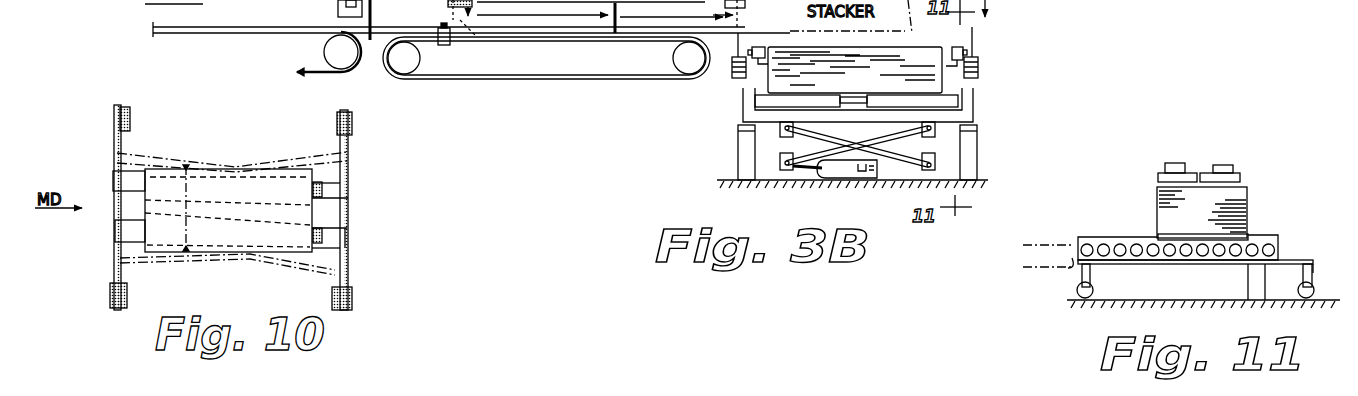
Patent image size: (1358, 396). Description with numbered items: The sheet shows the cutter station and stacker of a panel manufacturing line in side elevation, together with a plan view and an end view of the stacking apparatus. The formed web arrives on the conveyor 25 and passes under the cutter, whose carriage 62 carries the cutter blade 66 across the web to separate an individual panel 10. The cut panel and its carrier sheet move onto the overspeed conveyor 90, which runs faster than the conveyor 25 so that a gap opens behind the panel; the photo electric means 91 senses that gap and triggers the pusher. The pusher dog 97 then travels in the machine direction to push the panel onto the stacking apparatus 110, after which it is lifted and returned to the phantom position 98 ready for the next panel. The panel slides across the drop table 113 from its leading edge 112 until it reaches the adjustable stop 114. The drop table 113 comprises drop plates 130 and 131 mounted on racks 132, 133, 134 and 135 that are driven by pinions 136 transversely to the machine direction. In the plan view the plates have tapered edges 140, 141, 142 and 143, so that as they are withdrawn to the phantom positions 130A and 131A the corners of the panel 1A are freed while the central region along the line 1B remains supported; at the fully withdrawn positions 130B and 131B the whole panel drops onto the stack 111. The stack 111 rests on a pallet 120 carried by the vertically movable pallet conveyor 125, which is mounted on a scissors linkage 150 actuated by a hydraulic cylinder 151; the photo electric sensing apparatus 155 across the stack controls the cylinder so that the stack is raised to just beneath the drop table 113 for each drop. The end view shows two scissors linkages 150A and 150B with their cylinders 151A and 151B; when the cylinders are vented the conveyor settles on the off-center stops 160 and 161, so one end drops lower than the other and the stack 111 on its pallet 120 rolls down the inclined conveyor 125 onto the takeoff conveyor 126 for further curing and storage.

In FIG. 3B, the panel 10 is at (682, 22).
In FIG. 3B, the conveyor 25 is at (153, 30).
In FIG. 3B, the carriage 62 is at (338, 10).
In FIG. 3B, the cutter blade 66 is at (370, 40).
In FIG. 3B, the overspeed conveyor 90 is at (569, 85).
In FIG. 3B, the photo electric means 91 is at (443, 27).
In FIG. 3B, the pusher dog 97 is at (612, 26).
In FIG. 3B, the pusher dog return position 98 is at (463, 33).
In FIG. 3B, the stacking apparatus 110 is at (1035, 43).
In FIG. 10, the stacking apparatus 110 is at (454, 220).
In FIG. 11, the stacking apparatus 110 is at (1284, 172).
In FIG. 3B, the stack 111 is at (857, 70).
In FIG. 11, the stack 111 is at (1247, 204).
In FIG. 3B, the leading edge 112 is at (742, 36).
In FIG. 10, the leading edge 112 is at (115, 187).
In FIG. 3B, the drop table 113 is at (982, 36).
In FIG. 10, the drop table 113 is at (349, 236).
In FIG. 11, the drop table 113 is at (1156, 177).
In FIG. 3B, the stop 114 is at (985, 33).
In FIG. 10, the stop 114 is at (327, 186).
In FIG. 11, the stop 114 is at (1220, 164).
In FIG. 3B, the pallet 120 is at (945, 93).
In FIG. 11, the pallet 120 is at (1235, 234).
In FIG. 3B, the pallet conveyor 125 is at (977, 100).
In FIG. 11, the pallet conveyor 125 is at (1282, 238).
In FIG. 11, the takeoff conveyor 126 is at (1043, 247).
In FIG. 10, the drop plate 130 is at (348, 192).
In FIG. 10, the drop plate intermediate position 130A is at (268, 162).
In FIG. 10, the drop plate withdrawn position 130B is at (305, 160).
In FIG. 10, the drop plate 131 is at (127, 230).
In FIG. 10, the drop plate intermediate position 131A is at (273, 264).
In FIG. 10, the drop plate withdrawn position 131B is at (297, 268).
In FIG. 10, the rack 132 is at (348, 152).
In FIG. 3B, the rack 133 is at (980, 50).
In FIG. 10, the rack 133 is at (347, 281).
In FIG. 10, the rack 134 is at (115, 143).
In FIG. 3B, the rack 135 is at (730, 68).
In FIG. 10, the rack 135 is at (117, 273).
In FIG. 3B, the pinion 136 is at (735, 79).
In FIG. 10, the pinion 136 is at (130, 112).
In FIG. 10, the tapered edge 140 is at (130, 218).
In FIG. 10, the tapered edge 141 is at (330, 226).
In FIG. 10, the tapered edge 142 is at (285, 213).
In FIG. 10, the tapered edge 143 is at (128, 200).
In FIG. 3B, the scissors linkage 150 is at (798, 143).
In FIG. 11, the scissors linkage 150A is at (1093, 274).
In FIG. 11, the scissors linkage 150B is at (1333, 258).
In FIG. 3B, the hydraulic cylinder 151 is at (840, 178).
In FIG. 11, the hydraulic cylinder 151A is at (1078, 287).
In FIG. 11, the hydraulic cylinder 151B is at (1305, 302).
In FIG. 3B, the photo electric sensing apparatus 155 is at (766, 62).
In FIG. 3B, the stop 160 is at (740, 132).
In FIG. 3B, the stop 161 is at (978, 147).
In FIG. 11, the stop 161 is at (1253, 273).
In FIG. 10, the panel 1A is at (234, 189).
In FIG. 10, the line 1B is at (188, 228).